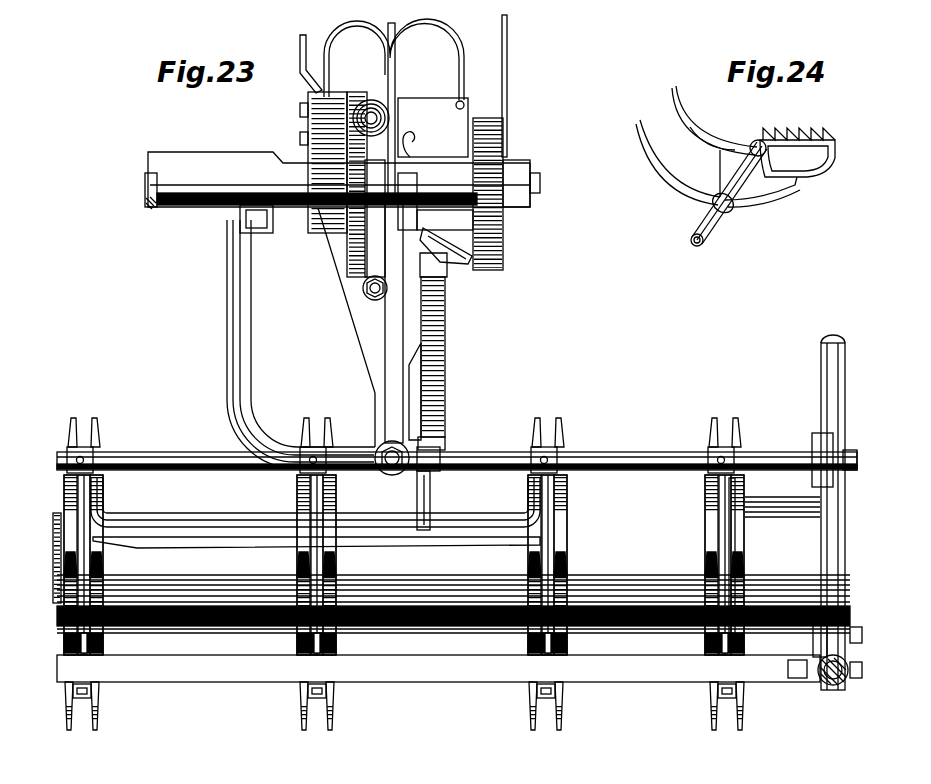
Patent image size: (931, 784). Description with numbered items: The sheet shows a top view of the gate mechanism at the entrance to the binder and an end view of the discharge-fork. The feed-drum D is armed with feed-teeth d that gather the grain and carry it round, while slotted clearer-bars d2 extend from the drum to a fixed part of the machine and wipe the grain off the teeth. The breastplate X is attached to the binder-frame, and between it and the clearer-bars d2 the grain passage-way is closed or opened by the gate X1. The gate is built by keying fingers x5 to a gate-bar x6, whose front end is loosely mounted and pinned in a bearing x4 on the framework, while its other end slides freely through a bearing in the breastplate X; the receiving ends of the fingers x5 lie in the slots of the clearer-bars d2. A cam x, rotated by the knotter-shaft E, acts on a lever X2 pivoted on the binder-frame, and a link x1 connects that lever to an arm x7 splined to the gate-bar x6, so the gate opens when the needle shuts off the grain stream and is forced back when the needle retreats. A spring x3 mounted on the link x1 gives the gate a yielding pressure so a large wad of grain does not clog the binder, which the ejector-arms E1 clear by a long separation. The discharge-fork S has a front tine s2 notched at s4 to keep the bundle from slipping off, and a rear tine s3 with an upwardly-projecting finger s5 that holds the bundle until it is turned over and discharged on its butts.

In FIG. 23, the knotter-shaft E is at (531, 185).
In FIG. 23, the ejector-arms E1 is at (511, 33).
In FIG. 23, the breastplate X is at (356, 184).
In FIG. 23, the cam x is at (504, 238).
In FIG. 23, the lever X2 is at (444, 262).
In FIG. 23, the spring x3 is at (446, 364).
In FIG. 23, the link x1 is at (441, 438).
In FIG. 23, the arm x7 is at (427, 486).
In FIG. 23, the gate-bar x6 is at (627, 458).
In FIG. 23, the feed-teeth d is at (95, 418).
In FIG. 23, the gate X1 is at (275, 530).
In FIG. 23, the feed-drum D is at (451, 565).
In FIG. 23, the fingers x5 is at (338, 566).
In FIG. 23, the bearing x4 is at (813, 448).
In FIG. 23, the clearer-bars d2 is at (93, 647).
In FIG. 24, the rear tine s3 is at (693, 193).
In FIG. 24, the upwardly-projecting finger s5 is at (717, 167).
In FIG. 24, the notches s4 is at (800, 133).
In FIG. 24, the front tine s2 is at (743, 146).
In FIG. 24, the discharge-fork S is at (727, 214).